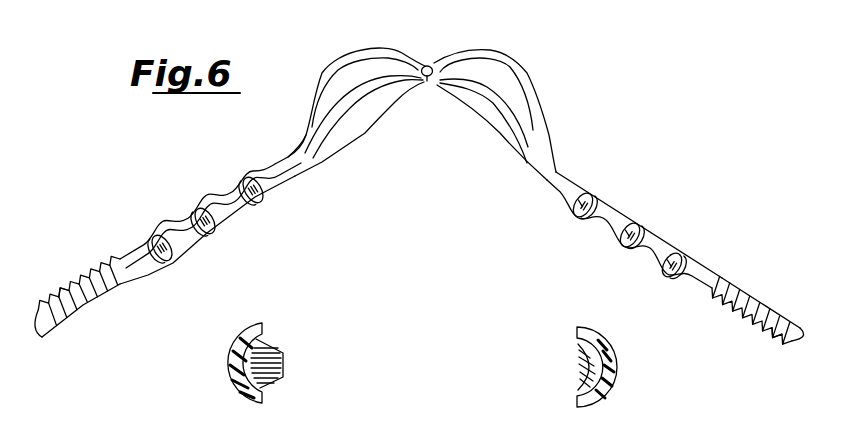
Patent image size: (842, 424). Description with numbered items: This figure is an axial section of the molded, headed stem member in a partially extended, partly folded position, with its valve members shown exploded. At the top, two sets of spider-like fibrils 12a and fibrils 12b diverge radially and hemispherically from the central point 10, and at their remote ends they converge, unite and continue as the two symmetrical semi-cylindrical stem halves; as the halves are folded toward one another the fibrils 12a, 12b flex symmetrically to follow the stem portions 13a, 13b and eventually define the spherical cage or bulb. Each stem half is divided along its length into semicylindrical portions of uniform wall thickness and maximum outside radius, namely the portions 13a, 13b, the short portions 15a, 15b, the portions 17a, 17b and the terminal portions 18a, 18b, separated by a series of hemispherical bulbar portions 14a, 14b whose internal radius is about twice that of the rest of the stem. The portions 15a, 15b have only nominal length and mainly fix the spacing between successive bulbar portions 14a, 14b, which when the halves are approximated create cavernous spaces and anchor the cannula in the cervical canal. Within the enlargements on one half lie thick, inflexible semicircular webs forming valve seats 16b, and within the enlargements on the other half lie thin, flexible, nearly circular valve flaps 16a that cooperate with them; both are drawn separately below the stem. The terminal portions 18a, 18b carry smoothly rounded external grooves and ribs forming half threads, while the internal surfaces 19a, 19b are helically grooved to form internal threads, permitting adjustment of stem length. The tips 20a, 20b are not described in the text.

The point 10 is at (426, 79).
The fibrils 12a is at (336, 60).
The fibrils 12b is at (503, 60).
The stem portion 13a is at (277, 160).
The stem portion 13b is at (555, 168).
The bulbar portion 14a is at (243, 178).
The bulbar portion 14b is at (597, 188).
The stem portion 15a is at (223, 200).
The stem portion 15b is at (617, 207).
The valve flap 16a is at (268, 200).
The valve seat 16b is at (570, 207).
The stem portion 17a is at (113, 262).
The stem portion 17b is at (720, 273).
The terminal portion 18a is at (83, 282).
The terminal portion 18b is at (777, 317).
The internal surface 19a is at (70, 313).
The internal surface 19b is at (777, 337).
The left tip 20a is at (37, 340).
The right tip 20b is at (800, 350).